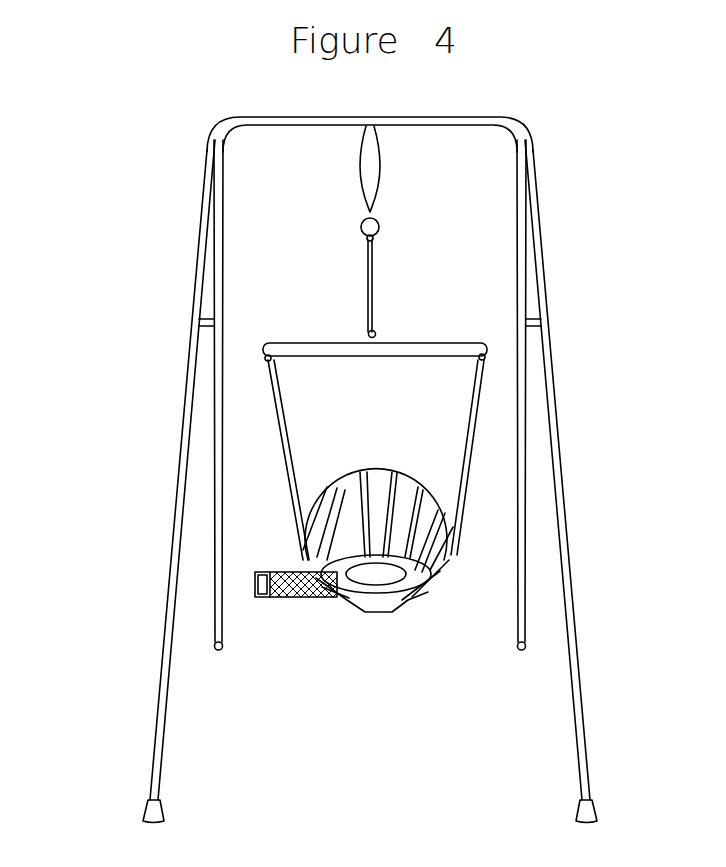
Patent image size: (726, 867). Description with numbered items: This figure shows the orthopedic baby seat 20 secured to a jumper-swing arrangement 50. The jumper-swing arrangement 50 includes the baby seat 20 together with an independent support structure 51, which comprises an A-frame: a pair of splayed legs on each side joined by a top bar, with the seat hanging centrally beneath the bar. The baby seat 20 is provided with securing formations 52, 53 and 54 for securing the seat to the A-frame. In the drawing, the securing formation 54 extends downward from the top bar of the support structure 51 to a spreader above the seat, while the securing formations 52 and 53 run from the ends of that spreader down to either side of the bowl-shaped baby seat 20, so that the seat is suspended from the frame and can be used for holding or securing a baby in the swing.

The baby seat 20 is at (367, 637).
The jumper-swing arrangement 50 is at (452, 250).
The independent support structure 51 is at (213, 433).
The securing formation 52 is at (468, 442).
The securing formation 53 is at (302, 447).
The securing formation 54 is at (380, 288).